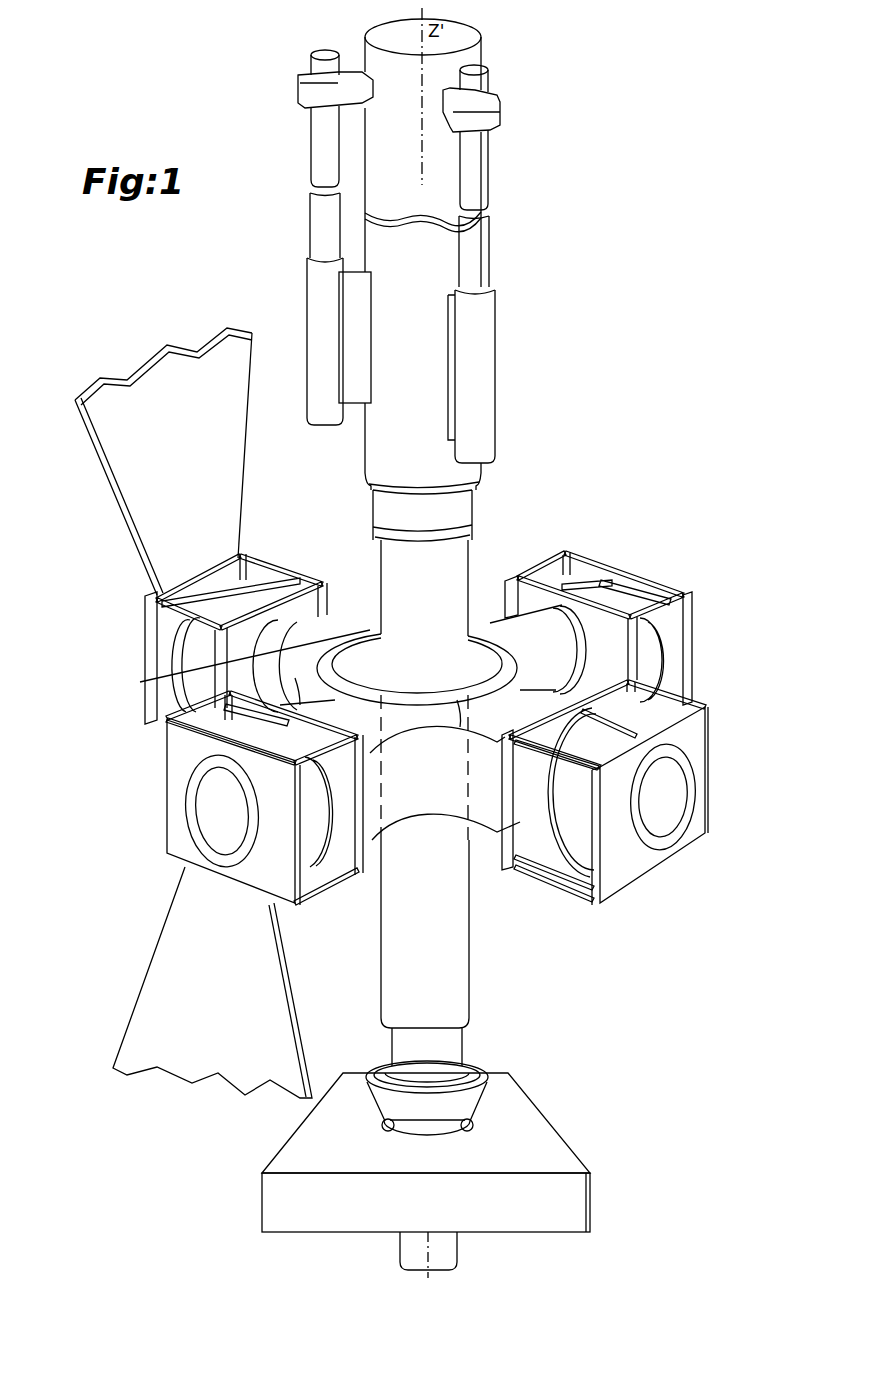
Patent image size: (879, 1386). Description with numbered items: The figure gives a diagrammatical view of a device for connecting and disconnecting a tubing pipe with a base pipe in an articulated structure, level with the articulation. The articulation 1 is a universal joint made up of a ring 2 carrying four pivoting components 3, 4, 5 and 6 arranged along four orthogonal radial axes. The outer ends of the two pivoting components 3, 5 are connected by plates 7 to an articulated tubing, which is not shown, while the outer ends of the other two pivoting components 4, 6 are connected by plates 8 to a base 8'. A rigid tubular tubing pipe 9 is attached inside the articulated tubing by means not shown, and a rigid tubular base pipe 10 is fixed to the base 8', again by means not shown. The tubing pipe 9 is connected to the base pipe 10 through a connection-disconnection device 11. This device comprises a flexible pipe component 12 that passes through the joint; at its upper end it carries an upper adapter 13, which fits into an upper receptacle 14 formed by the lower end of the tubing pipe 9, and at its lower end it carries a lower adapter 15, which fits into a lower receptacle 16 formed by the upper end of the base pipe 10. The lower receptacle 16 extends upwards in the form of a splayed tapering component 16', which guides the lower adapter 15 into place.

The articulation 1 is at (150, 745).
The ring 2 is at (300, 650).
The pivoting component 3 is at (145, 640).
The pivoting component 4 is at (190, 840).
The pivoting component 5 is at (690, 828).
The pivoting component 6 is at (648, 568).
The plates 7 is at (142, 528).
The plates 8 is at (191, 982).
The base 8' is at (390, 1152).
The tubing pipe 9 is at (481, 33).
The base pipe 10 is at (457, 1250).
The connection-disconnection device 11 is at (482, 905).
The flexible pipe component 12 is at (455, 565).
The upper adapter 13 is at (480, 500).
The upper receptacle 14 is at (437, 380).
The lower adapter 15 is at (472, 1055).
The splayed tapering component 16' is at (495, 1084).
The lower receptacle 16 is at (500, 1117).